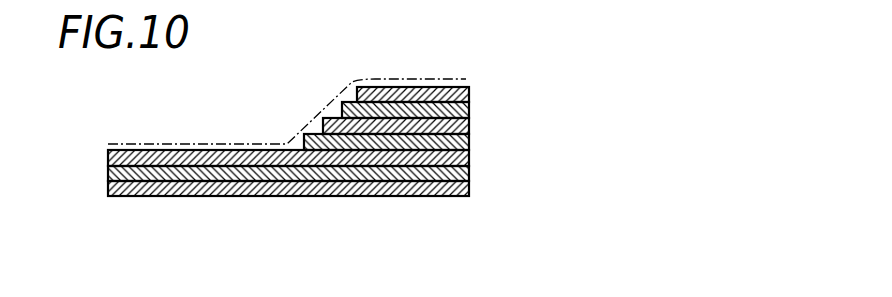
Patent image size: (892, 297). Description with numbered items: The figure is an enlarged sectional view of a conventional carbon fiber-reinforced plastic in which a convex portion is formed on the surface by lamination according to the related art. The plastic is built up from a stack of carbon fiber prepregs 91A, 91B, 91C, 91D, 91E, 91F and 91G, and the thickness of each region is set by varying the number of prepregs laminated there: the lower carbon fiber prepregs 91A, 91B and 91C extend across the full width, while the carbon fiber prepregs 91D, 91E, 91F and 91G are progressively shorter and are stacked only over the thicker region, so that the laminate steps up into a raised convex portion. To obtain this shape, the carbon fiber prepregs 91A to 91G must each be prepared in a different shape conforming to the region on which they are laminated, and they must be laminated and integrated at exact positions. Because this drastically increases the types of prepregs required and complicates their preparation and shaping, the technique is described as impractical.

The carbon fiber prepreg 91A is at (470, 194).
The carbon fiber prepreg 91B is at (470, 173).
The carbon fiber prepreg 91C is at (470, 155).
The carbon fiber prepreg 91D is at (470, 138).
The carbon fiber prepreg 91E is at (472, 117).
The carbon fiber prepreg 91F is at (472, 103).
The carbon fiber prepreg 91G is at (469, 85).